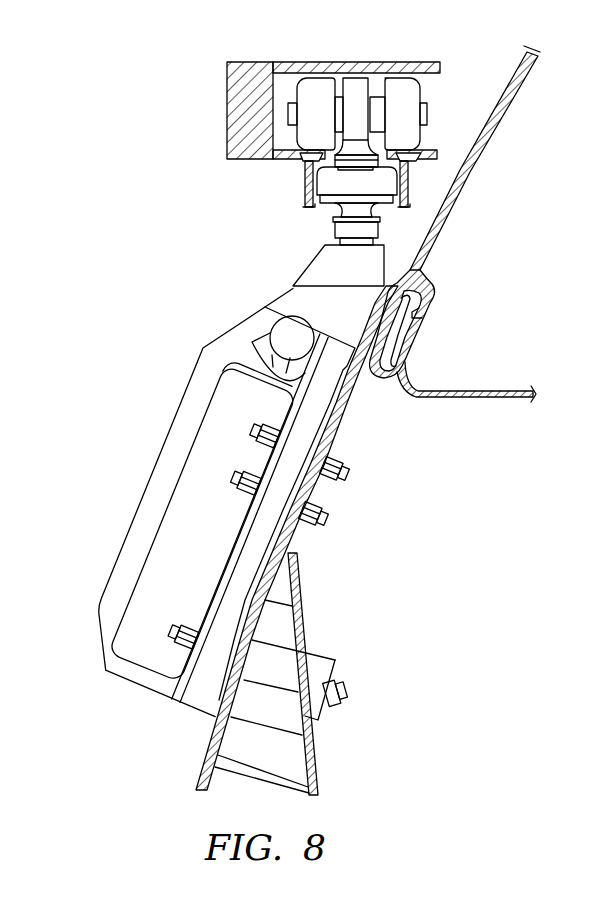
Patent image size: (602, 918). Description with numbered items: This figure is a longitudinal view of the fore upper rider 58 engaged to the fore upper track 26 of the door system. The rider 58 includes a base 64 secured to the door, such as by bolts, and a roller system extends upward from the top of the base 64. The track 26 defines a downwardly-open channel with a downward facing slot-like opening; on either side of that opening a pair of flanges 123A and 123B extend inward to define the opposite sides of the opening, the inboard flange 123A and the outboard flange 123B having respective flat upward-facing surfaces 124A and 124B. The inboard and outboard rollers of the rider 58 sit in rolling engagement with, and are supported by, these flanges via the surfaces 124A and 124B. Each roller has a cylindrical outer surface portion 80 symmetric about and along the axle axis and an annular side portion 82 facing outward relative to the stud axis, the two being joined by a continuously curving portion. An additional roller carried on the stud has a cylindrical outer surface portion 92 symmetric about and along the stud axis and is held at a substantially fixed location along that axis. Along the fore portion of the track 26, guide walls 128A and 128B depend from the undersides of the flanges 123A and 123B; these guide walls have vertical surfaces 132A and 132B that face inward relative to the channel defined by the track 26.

The fore upper track 26 is at (285, 82).
The cylindrical outer surface portion 80 is at (377, 73).
The annular side portion 82 is at (297, 92).
The cylindrical outer surface portion 92 is at (397, 181).
The inboard flange 123A is at (433, 155).
The outboard flange 123B is at (294, 155).
The upward-facing surface 124A is at (420, 150).
The upward-facing surface 124B is at (293, 148).
The guide wall 128A is at (409, 201).
The guide wall 128B is at (306, 203).
The vertical surface 132A is at (405, 209).
The vertical surface 132B is at (313, 206).
The base 64 is at (318, 264).
The fore upper rider 58 is at (226, 318).